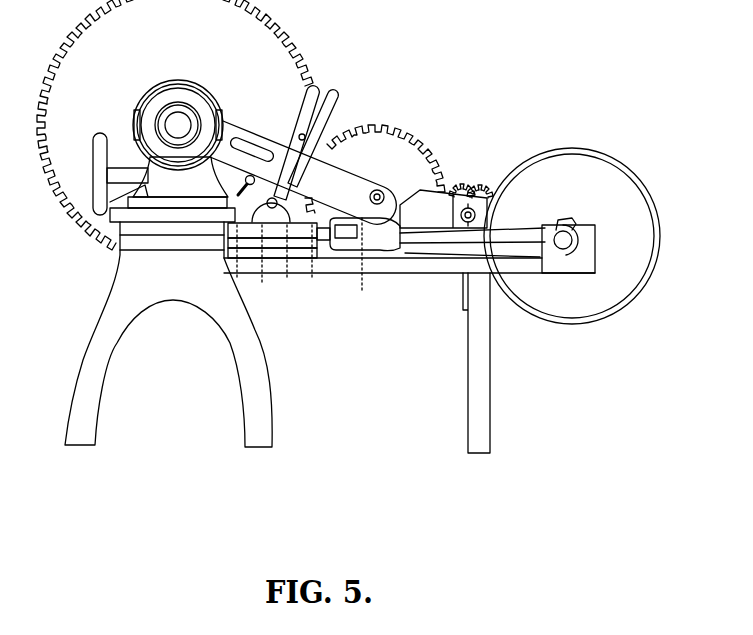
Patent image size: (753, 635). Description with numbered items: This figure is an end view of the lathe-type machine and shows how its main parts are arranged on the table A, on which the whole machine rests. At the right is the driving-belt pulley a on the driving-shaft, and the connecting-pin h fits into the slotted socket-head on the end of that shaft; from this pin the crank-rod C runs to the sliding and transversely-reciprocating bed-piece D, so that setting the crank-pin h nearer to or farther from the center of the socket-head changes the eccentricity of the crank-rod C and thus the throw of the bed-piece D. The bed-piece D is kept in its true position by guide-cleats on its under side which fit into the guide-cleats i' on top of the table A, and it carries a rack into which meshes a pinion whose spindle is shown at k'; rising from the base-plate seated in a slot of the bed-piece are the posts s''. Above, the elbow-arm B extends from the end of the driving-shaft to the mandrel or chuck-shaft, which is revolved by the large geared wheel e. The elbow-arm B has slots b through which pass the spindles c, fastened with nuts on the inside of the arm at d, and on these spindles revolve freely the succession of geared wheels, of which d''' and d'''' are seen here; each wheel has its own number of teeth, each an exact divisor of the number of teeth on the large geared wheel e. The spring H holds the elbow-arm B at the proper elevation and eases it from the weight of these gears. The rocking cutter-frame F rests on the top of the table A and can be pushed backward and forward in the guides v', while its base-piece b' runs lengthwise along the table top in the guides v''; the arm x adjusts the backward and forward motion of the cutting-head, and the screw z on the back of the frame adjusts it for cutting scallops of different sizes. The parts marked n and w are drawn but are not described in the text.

The table A is at (330, 337).
The large geared wheel e is at (175, 125).
The posts s'' is at (172, 189).
The guide-cleats i' is at (100, 174).
The pinion spindle k' is at (127, 175).
The elbow-arm B is at (303, 172).
The slots b is at (362, 168).
The lever n is at (303, 143).
The adjusting arm x is at (312, 138).
The pivot boss w is at (271, 210).
The adjusting screw z is at (239, 183).
The spindle fastening d is at (390, 155).
The geared wheel d'''' is at (397, 161).
The geared wheel d''' is at (456, 186).
The spindles c is at (468, 215).
The guides v' is at (272, 240).
The guides v'' is at (278, 260).
The base-piece b' is at (262, 262).
The rocking cutter-frame F is at (284, 262).
The spring H is at (360, 266).
The crank-rod C is at (431, 237).
The sliding and transversely-reciprocating bed-piece D is at (345, 232).
The driving-belt pulley a is at (572, 236).
The connecting-pin h is at (566, 232).